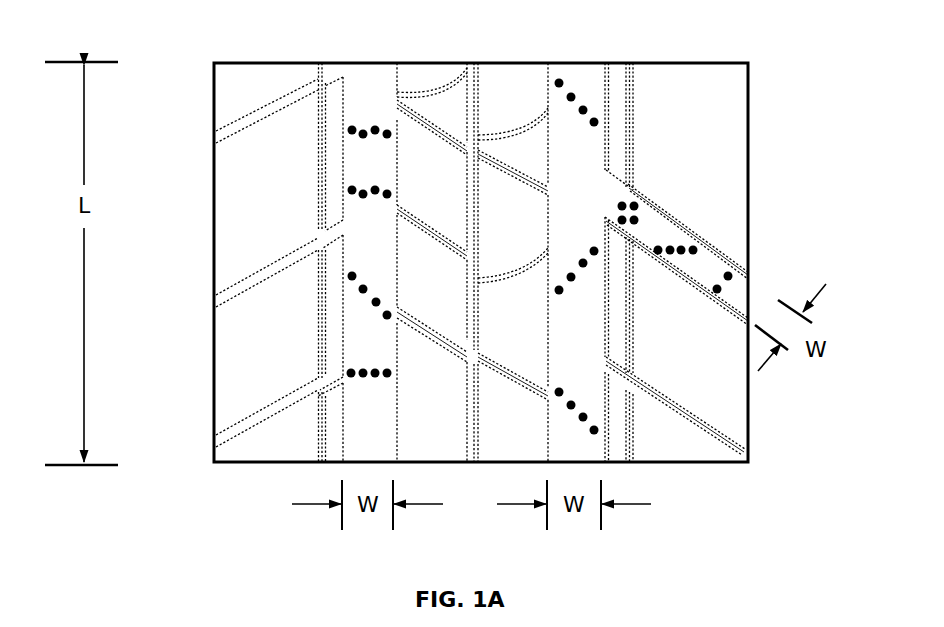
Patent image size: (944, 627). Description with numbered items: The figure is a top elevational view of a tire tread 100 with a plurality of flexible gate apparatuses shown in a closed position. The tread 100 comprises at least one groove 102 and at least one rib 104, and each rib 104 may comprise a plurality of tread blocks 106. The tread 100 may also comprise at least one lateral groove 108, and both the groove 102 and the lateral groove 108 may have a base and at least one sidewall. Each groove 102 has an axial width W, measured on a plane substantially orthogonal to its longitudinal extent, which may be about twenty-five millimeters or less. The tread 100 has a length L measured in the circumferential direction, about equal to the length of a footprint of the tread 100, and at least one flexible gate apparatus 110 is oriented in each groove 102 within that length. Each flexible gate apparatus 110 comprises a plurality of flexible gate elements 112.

The tread 100 is at (160, 42).
The groove 102 is at (366, 80).
The rib 104 is at (271, 80).
The tread block 106 is at (710, 137).
The lateral groove 108 is at (708, 265).
The flexible gate apparatus 110 is at (355, 147).
The flexible gate element 112 is at (350, 282).